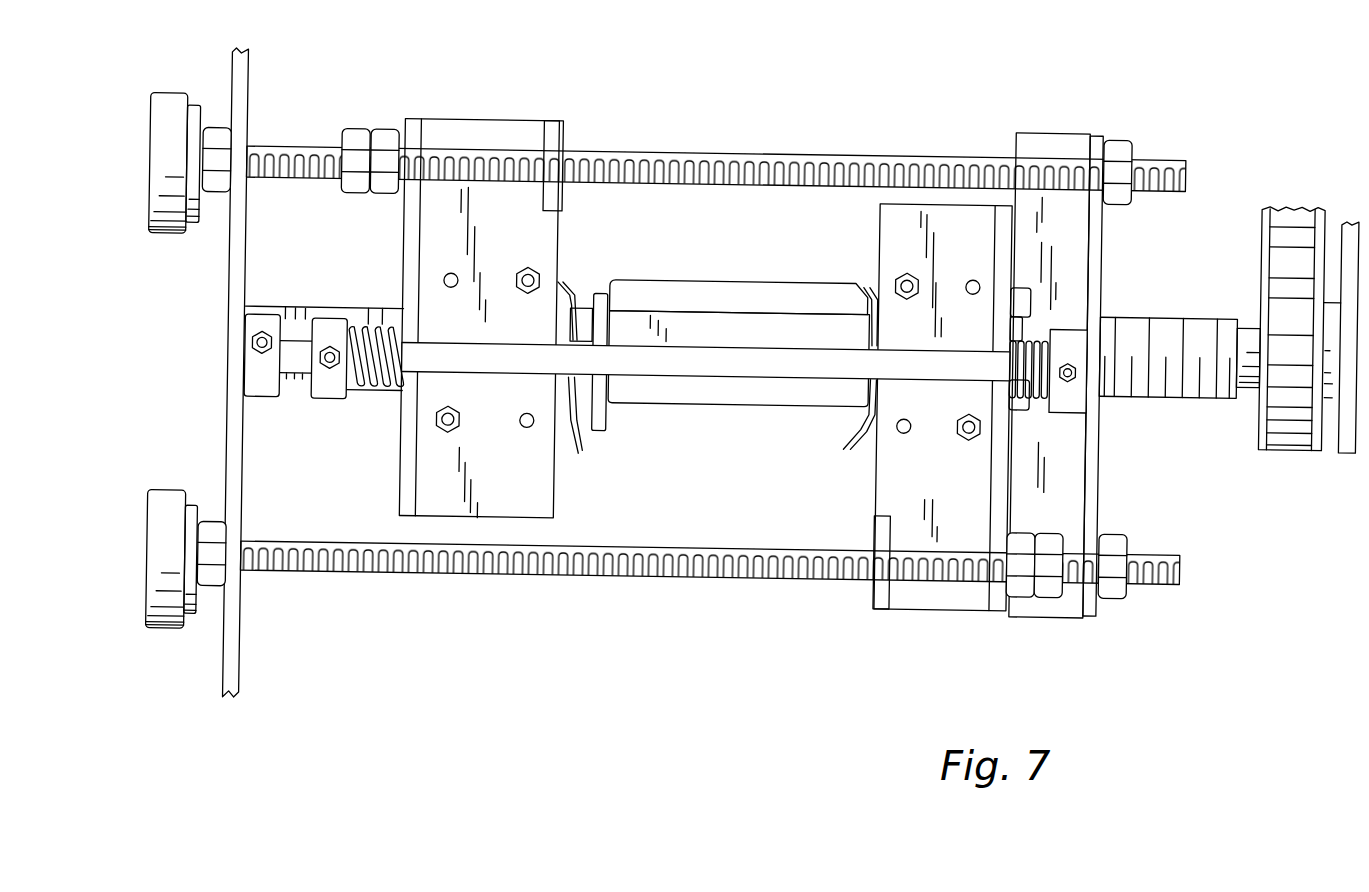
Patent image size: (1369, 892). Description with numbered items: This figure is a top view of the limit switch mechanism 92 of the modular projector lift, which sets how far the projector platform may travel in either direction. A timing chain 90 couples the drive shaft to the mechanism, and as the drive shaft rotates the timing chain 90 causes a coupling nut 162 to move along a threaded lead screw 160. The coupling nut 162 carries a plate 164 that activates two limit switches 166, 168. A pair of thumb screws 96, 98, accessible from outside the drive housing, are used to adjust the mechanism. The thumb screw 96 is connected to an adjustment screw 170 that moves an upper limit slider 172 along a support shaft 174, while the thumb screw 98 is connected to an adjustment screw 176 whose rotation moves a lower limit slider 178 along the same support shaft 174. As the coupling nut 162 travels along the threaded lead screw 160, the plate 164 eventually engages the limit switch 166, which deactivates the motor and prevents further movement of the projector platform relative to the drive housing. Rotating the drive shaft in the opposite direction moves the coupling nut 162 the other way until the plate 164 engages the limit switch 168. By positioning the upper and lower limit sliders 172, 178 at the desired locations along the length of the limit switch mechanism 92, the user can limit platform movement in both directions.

The timing chain 90 is at (1286, 201).
The limit switch mechanism 92 is at (726, 365).
The thumb screw 96 is at (165, 129).
The thumb screw 98 is at (171, 519).
The threaded lead screw 160 is at (1155, 316).
The coupling nut 162 is at (752, 284).
The plate 164 is at (609, 426).
The limit switch 166 is at (578, 417).
The limit switch 168 is at (867, 423).
The adjustment screw 170 is at (690, 168).
The upper limit slider 172 is at (470, 116).
The support shaft 174 is at (760, 360).
The adjustment screw 176 is at (493, 554).
The lower limit slider 178 is at (943, 589).